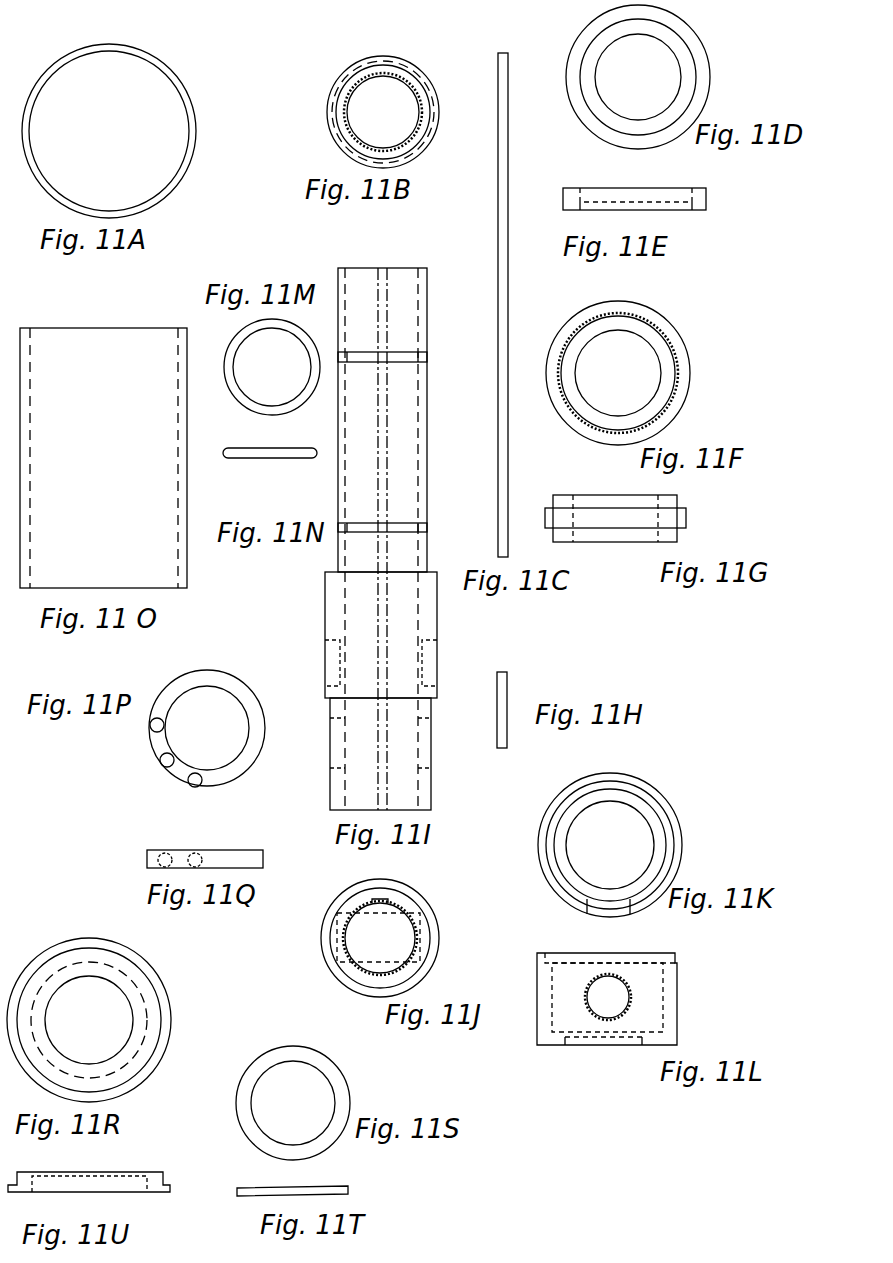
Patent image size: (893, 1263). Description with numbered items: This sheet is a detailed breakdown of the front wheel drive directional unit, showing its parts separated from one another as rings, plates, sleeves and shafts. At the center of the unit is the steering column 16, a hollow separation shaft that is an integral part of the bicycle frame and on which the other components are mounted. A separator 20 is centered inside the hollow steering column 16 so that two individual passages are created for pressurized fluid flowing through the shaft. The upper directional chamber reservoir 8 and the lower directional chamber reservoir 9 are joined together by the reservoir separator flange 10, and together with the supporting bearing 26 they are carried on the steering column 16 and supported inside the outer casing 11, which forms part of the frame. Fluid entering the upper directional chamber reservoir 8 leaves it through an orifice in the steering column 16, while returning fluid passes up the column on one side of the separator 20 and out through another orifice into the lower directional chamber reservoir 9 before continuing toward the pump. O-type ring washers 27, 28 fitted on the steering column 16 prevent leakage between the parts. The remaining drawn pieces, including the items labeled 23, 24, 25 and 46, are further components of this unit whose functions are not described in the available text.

In FIG. 11L, the upper directional chamber reservoir 8 is at (662, 1048).
In FIG. 11L, the lower directional chamber reservoir 9 is at (607, 999).
In FIG. 11G, the reservoir separator flange 10 is at (660, 548).
In FIG. 11O, the outer casing 11 is at (187, 582).
In FIG. 11I, the steering column 16 is at (431, 790).
In FIG. 11C, the separator 20 is at (498, 220).
In FIG. 11H, the separator 20 is at (510, 690).
In FIG. 11P, the ball retaining ring 23 is at (215, 830).
In FIG. 11Q, the ball retaining ring 23 is at (205, 859).
In FIG. 11E, the flat ring plate 24 is at (686, 212).
In FIG. 11P, the balls 25 is at (207, 728).
In FIG. 11Q, the balls 25 is at (205, 859).
In FIG. 11U, the supporting bearing 26 is at (152, 1172).
In FIG. 11N, the O-type ring washer 27 is at (270, 453).
In FIG. 11N, the O-type ring washer 28 is at (232, 460).
In FIG. 11S, the ring 46 is at (352, 1100).